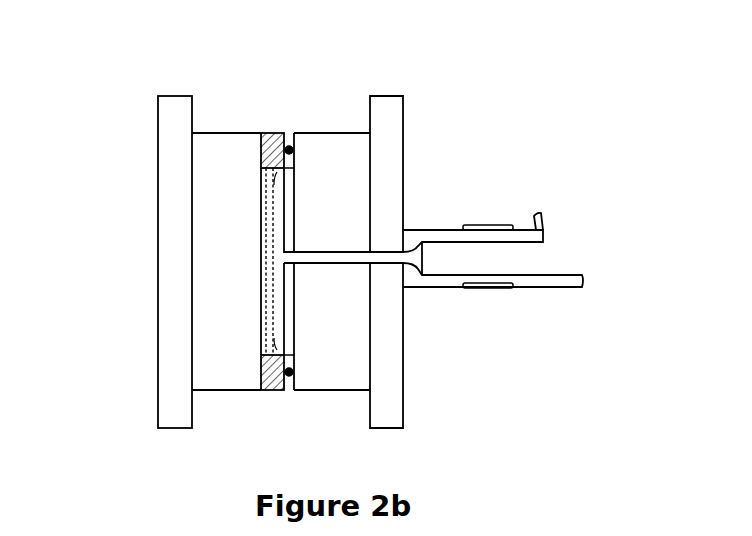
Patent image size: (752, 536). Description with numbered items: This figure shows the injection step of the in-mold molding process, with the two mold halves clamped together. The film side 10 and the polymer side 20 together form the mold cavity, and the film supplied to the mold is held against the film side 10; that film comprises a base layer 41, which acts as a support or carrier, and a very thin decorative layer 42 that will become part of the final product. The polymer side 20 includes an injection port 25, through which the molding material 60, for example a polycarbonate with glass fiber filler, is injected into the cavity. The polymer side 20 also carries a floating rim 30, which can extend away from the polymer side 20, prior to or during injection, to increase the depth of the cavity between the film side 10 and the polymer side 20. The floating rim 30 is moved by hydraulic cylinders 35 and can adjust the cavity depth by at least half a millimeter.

The film side 10 is at (212, 153).
The polymer side 20 is at (350, 213).
The injection port 25 is at (294, 250).
The floating rim 30 is at (265, 386).
The hydraulic cylinders 35 is at (290, 146).
The base layer 41 is at (258, 195).
The decorative layer 42 is at (268, 310).
The molding material 60 is at (275, 286).